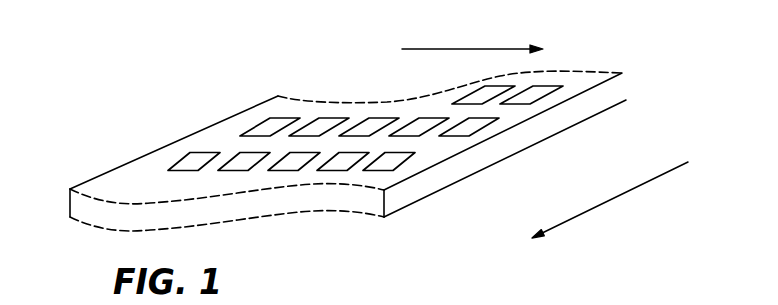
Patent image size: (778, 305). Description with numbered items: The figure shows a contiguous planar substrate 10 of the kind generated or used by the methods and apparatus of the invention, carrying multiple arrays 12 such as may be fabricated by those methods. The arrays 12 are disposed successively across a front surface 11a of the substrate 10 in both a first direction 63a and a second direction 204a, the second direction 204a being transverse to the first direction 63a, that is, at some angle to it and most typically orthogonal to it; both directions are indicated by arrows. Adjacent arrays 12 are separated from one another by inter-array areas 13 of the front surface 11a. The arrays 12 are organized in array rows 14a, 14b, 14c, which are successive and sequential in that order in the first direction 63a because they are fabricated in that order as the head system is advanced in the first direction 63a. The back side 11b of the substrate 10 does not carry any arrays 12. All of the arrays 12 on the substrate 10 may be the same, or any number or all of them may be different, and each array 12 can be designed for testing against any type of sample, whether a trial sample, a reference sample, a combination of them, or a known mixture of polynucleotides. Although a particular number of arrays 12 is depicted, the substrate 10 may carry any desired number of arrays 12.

The substrate 10 is at (339, 165).
The front surface 11a is at (123, 182).
The back side 11b is at (113, 217).
The arrays 12 is at (255, 128).
The inter-array areas 13 is at (307, 170).
The array row 14a is at (533, 93).
The array row 14b is at (470, 127).
The array row 14c is at (408, 157).
The second direction 204a is at (480, 48).
The first direction 63a is at (597, 206).